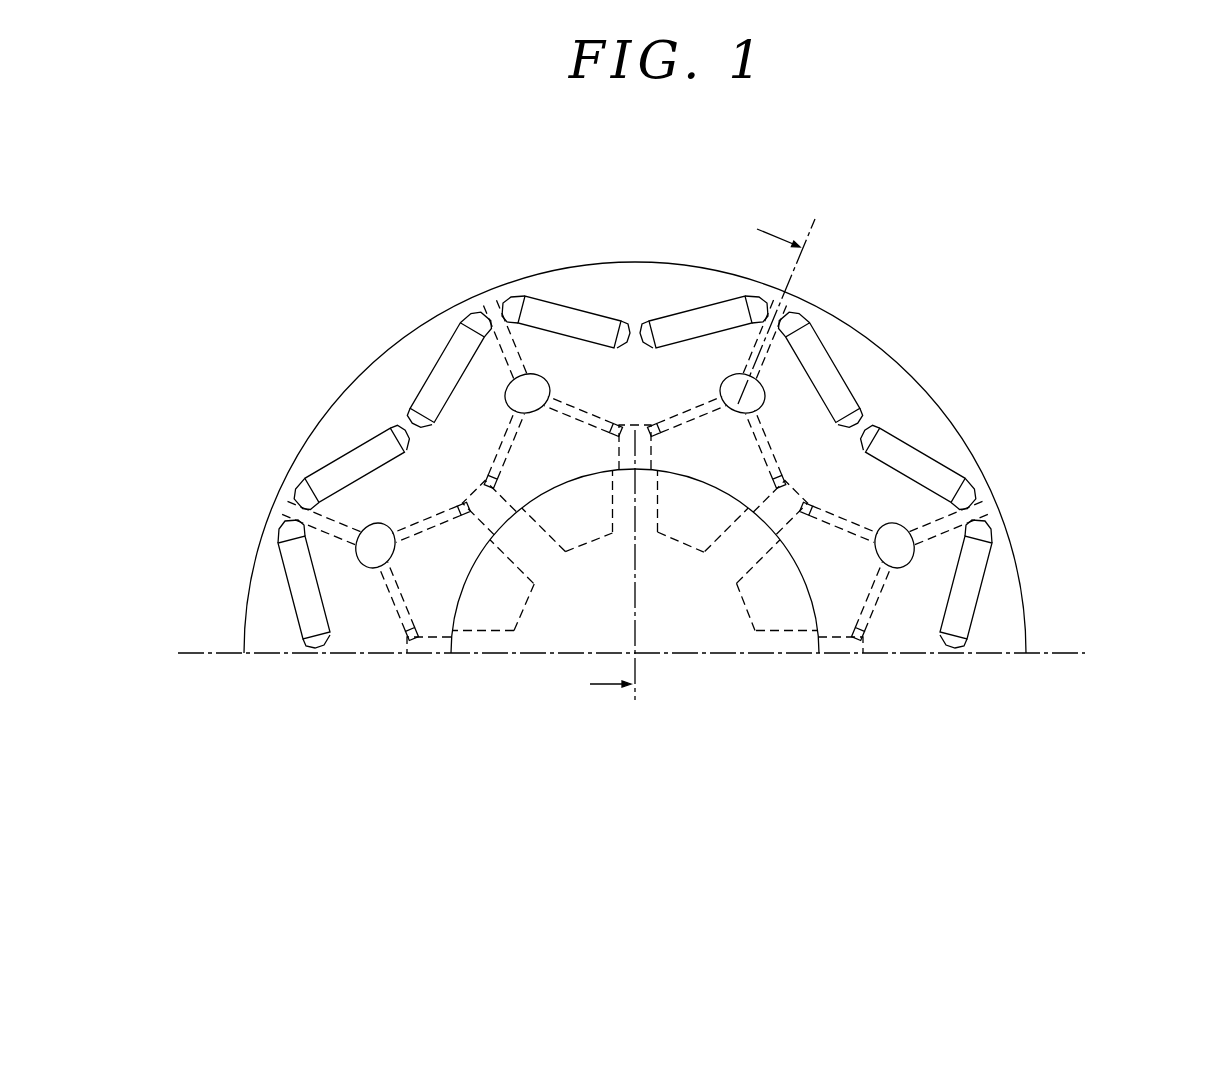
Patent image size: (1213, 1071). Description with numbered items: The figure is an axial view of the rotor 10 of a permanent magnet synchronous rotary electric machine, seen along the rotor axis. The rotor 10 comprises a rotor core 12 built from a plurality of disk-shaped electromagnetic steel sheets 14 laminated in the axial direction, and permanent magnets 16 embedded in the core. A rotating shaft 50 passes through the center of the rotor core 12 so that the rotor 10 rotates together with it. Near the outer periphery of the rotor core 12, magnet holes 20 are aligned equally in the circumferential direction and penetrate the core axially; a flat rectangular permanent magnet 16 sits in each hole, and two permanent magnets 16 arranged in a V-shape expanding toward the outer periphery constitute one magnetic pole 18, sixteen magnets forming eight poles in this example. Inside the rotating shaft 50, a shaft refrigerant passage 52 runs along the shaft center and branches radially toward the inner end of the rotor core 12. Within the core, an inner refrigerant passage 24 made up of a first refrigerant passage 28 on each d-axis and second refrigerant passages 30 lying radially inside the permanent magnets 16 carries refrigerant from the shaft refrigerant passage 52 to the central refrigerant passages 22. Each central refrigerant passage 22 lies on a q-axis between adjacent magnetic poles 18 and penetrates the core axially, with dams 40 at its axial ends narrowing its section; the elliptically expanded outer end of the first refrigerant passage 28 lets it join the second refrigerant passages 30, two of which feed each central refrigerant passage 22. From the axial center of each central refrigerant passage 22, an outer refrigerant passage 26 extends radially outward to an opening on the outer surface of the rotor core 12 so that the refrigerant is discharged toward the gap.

The rotor 10 is at (356, 247).
The rotor core 12 is at (1000, 607).
The electromagnetic steel sheet 14 is at (712, 457).
The permanent magnet 16 is at (635, 456).
The magnetic pole 18 is at (635, 245).
The magnet hole 20 is at (478, 308).
The central refrigerant passage 22 is at (378, 533).
The inner refrigerant passage 24 is at (591, 576).
The outer refrigerant passage 26 is at (272, 505).
The first refrigerant passage 28 is at (440, 648).
The second refrigerant passage 30 is at (397, 613).
The dam 40 is at (893, 557).
The rotating shaft 50 is at (775, 600).
The shaft refrigerant passage 52 is at (747, 617).